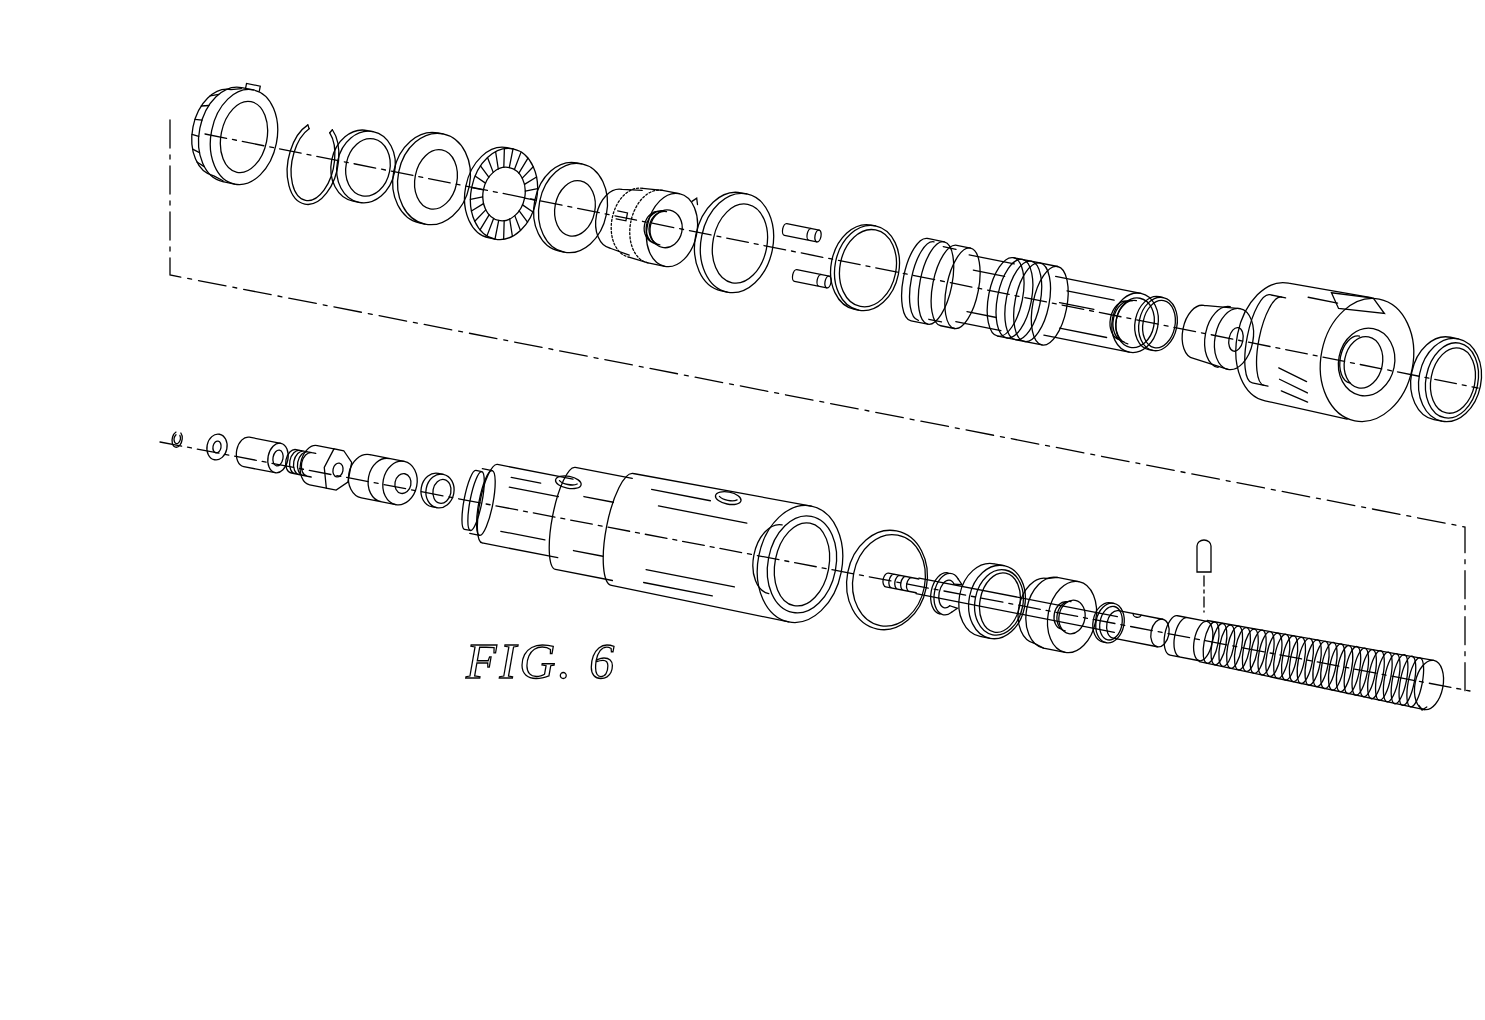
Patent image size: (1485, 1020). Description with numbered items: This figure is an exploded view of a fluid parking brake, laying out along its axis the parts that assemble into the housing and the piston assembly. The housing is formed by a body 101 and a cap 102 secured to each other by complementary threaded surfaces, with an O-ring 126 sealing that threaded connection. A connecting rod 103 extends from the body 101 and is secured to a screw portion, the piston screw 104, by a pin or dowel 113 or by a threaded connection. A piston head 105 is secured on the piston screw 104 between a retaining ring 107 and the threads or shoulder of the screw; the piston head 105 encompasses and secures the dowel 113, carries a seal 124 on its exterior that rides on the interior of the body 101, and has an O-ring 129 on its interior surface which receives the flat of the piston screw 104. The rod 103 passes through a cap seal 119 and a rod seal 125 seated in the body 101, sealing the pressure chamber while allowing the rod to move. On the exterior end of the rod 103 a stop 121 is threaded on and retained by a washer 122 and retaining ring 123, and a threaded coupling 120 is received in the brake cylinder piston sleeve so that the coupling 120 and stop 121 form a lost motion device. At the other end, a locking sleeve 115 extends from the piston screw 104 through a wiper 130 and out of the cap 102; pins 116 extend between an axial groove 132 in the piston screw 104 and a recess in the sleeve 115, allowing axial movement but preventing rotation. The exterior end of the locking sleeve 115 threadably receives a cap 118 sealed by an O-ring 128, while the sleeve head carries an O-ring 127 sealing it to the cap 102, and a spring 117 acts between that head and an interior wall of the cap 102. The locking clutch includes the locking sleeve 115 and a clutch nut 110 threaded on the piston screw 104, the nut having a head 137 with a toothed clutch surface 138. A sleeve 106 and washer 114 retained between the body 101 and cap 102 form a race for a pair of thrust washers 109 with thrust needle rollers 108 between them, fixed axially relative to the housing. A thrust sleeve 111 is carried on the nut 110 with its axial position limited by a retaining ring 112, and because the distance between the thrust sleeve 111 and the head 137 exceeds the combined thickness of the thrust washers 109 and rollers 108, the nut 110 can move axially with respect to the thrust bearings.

The body 101 is at (720, 488).
The cap 102 is at (1366, 298).
The connecting rod 103 is at (1154, 650).
The piston screw 104 is at (1308, 639).
The piston head 105 is at (1075, 580).
The sleeve 106 is at (242, 92).
The retaining ring 107 is at (955, 571).
The thrust needle rollers 108 is at (486, 236).
The thrust washers 109 is at (447, 138).
The clutch nut 110 is at (662, 211).
The thrust sleeve 111 is at (373, 134).
The retaining ring 112 is at (300, 192).
The dowel 113 is at (1213, 549).
The washer 114 is at (716, 286).
The locking sleeve 115 is at (1026, 299).
The pins 116 is at (796, 221).
The spring 117 is at (1032, 338).
The cap 118 is at (1219, 373).
The cap seal 119 is at (404, 466).
The threaded coupling 120 is at (330, 492).
The stop 121 is at (281, 447).
The washer 122 is at (213, 462).
The retaining ring 123 is at (186, 432).
The seal 124 is at (986, 641).
The rod seal 125 is at (435, 512).
The O-ring 126 is at (879, 638).
The O-ring 127 is at (876, 228).
The O-ring 128 is at (1166, 296).
The O-ring 129 is at (1107, 647).
The wiper 130 is at (1438, 422).
The axial groove 132 is at (1258, 633).
The head 137 is at (687, 196).
The clutch surface 138 is at (650, 191).